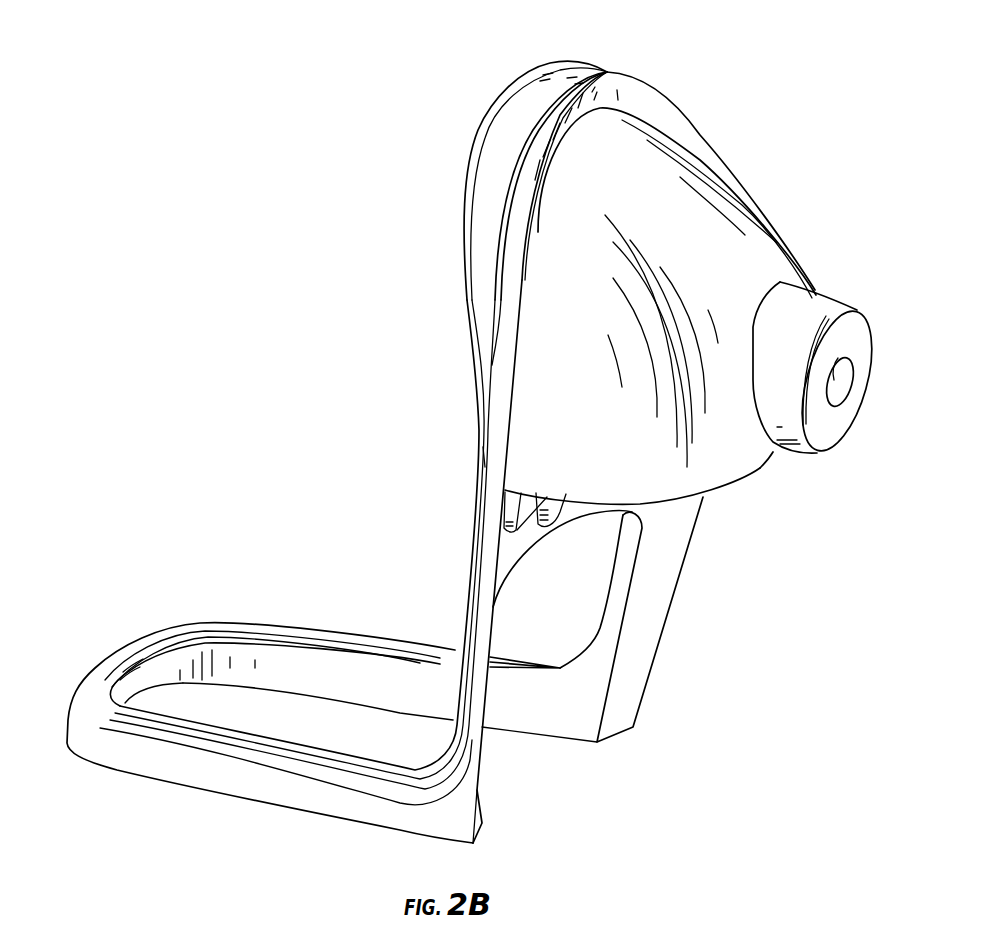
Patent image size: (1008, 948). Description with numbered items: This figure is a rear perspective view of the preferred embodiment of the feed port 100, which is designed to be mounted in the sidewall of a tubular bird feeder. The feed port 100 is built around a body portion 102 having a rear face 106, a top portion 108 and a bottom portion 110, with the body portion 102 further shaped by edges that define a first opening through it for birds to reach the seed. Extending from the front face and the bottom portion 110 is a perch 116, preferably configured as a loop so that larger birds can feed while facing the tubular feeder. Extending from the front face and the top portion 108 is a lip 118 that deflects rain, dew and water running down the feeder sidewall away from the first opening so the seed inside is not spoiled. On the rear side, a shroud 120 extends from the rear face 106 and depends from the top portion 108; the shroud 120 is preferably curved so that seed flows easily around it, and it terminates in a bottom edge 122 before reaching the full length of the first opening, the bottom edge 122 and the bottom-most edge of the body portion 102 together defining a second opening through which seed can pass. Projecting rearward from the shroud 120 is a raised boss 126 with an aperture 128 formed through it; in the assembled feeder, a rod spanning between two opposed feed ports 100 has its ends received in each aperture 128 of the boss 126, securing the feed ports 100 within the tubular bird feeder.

The feed port 100 is at (344, 219).
The body portion 102 is at (468, 550).
The rear face 106 is at (580, 512).
The top portion 108 is at (607, 72).
The bottom portion 110 is at (543, 540).
The perch 116 is at (103, 665).
The lip 118 is at (486, 100).
The shroud 120 is at (734, 170).
The bottom edge 122 is at (773, 453).
The raised boss 126 is at (831, 298).
The aperture 128 is at (840, 387).